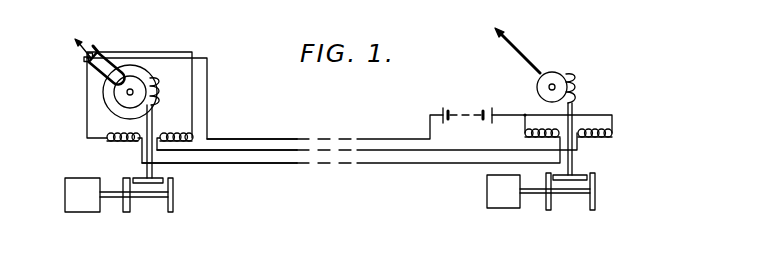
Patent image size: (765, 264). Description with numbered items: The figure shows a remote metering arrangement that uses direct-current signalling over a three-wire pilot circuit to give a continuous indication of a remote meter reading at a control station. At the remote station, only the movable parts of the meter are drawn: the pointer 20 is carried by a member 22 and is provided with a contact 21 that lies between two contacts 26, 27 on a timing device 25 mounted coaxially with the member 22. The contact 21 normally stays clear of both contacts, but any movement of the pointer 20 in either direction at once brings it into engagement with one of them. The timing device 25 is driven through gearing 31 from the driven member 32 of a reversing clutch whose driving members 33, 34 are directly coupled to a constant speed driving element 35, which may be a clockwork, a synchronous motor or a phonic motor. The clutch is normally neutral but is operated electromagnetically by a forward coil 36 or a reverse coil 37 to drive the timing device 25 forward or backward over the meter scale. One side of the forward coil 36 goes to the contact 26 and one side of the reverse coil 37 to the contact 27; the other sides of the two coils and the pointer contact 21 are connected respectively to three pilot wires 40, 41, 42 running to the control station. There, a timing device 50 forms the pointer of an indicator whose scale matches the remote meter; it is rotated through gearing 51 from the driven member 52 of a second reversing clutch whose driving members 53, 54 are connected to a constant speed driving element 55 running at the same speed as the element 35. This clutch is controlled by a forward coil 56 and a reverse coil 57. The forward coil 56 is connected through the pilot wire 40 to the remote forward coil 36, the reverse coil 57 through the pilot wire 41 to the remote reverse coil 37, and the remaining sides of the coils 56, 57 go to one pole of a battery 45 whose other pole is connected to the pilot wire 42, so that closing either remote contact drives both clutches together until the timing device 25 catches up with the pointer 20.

The pointer 20 is at (75, 43).
The contact 21 is at (97, 42).
The member carrying the meter pointer 22 is at (137, 72).
The timing device 25 is at (108, 82).
The contact 26 is at (101, 45).
The contact 27 is at (83, 59).
The gearing 31 is at (153, 85).
The driven member of reversing clutch 32 is at (163, 178).
The driving member of reversing clutch 33 is at (172, 207).
The driving member of reversing clutch 34 is at (127, 207).
The constant speed driving element 35 is at (82, 202).
The forward coil 36 is at (177, 131).
The reverse coil 37 is at (107, 138).
The pilot wire 40 is at (285, 152).
The pilot wire 41 is at (285, 163).
The pilot wire 42 is at (297, 138).
The battery 45 is at (468, 112).
The timing device 50 is at (522, 58).
The gearing 51 is at (573, 82).
The driven member of reversing clutch 52 is at (587, 175).
The driving member of reversing clutch 53 is at (597, 200).
The driving member of reversing clutch 54 is at (550, 208).
The constant speed driving element 55 is at (507, 202).
The forward coil 56 is at (613, 132).
The reverse coil 57 is at (542, 129).